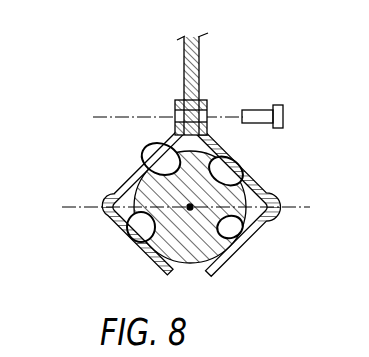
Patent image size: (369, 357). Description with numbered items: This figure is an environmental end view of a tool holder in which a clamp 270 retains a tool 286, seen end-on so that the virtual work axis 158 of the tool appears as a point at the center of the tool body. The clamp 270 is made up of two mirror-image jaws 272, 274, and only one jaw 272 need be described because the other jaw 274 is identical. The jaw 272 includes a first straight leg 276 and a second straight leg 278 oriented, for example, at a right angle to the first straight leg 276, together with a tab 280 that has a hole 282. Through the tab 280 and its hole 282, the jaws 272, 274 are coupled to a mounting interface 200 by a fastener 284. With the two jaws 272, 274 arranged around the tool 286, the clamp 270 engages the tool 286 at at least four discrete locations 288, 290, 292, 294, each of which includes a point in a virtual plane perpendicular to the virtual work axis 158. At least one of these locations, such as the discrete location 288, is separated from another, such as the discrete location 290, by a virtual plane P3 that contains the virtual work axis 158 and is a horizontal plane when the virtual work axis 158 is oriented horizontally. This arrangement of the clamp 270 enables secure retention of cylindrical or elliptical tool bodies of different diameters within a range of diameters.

The mounting interface 200 is at (199, 58).
The clamp 270 is at (260, 72).
The hole 282 is at (172, 112).
The fastener 284 is at (262, 110).
The tab 280 is at (175, 128).
The virtual work axis 158 is at (190, 207).
The discrete location 288 is at (150, 143).
The second straight leg 278 is at (142, 152).
The discrete location 294 is at (233, 201).
The discrete location 290 is at (128, 224).
The discrete location 292 is at (230, 208).
The first straight leg 276 is at (141, 247).
The jaw 272 is at (132, 270).
The jaw 274 is at (260, 263).
The tool 286 is at (187, 263).
The virtual plane P3 is at (102, 207).